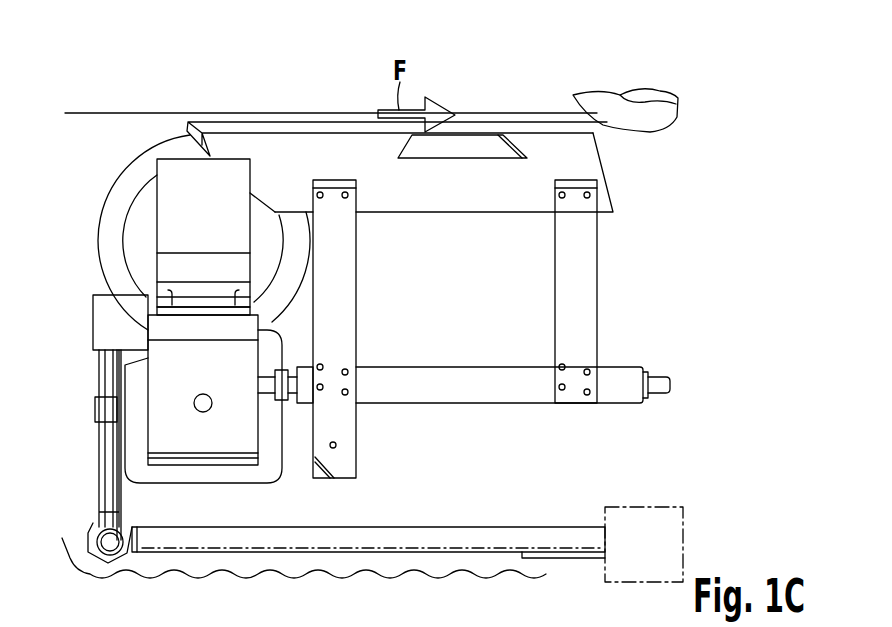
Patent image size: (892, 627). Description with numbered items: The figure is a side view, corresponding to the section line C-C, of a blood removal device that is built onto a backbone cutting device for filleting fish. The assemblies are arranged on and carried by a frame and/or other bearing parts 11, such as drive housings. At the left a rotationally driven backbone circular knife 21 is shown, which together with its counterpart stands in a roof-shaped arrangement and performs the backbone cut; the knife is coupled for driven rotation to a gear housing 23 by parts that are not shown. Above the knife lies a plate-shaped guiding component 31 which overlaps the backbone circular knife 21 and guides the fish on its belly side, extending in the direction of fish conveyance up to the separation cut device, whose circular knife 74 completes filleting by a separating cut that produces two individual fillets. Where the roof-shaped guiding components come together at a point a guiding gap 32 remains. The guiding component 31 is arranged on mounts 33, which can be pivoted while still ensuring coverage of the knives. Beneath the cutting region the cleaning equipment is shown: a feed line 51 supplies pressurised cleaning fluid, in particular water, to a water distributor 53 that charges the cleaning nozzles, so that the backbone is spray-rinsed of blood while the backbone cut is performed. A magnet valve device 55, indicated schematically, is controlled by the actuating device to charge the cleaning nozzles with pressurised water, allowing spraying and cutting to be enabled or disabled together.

The frame and/or other bearing parts 11 is at (217, 475).
The backbone circular knife 21 is at (133, 237).
The gear housing 23 is at (175, 168).
The guiding component 31 is at (252, 145).
The guiding gap 32 is at (220, 118).
The mount 33 is at (348, 290).
The feed line 51 is at (112, 502).
The water distributor 53 is at (100, 320).
The magnet valve device 55 is at (643, 505).
The circular knife 74 is at (677, 117).